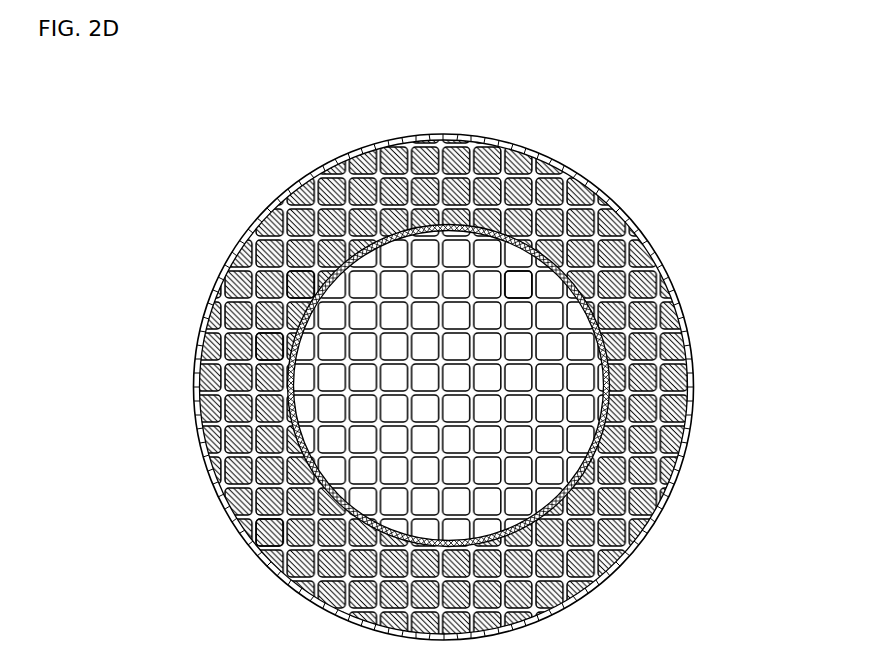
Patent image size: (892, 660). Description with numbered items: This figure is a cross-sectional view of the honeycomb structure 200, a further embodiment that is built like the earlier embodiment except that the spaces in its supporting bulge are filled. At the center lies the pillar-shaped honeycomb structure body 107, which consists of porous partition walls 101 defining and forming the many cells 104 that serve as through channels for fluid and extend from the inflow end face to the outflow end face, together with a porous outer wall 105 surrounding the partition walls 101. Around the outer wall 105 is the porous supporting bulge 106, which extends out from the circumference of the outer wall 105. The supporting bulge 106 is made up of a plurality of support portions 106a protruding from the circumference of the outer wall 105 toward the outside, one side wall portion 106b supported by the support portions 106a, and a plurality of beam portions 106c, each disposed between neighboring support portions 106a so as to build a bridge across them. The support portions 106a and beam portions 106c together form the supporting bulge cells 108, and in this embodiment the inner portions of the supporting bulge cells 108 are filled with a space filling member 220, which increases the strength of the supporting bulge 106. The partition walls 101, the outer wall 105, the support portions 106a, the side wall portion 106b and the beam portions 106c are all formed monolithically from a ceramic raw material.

The honeycomb structure 200 is at (746, 92).
The partition walls 101 is at (472, 263).
The cells 104 is at (517, 282).
The outer wall 105 is at (565, 295).
The supporting bulge 106 is at (197, 400).
The support portions 106a is at (603, 347).
The side wall portion 106b is at (690, 395).
The beam portions 106c is at (600, 397).
The honeycomb structure body 107 is at (287, 298).
The supporting bulge cells 108 is at (262, 340).
The space filling member 220 is at (268, 532).